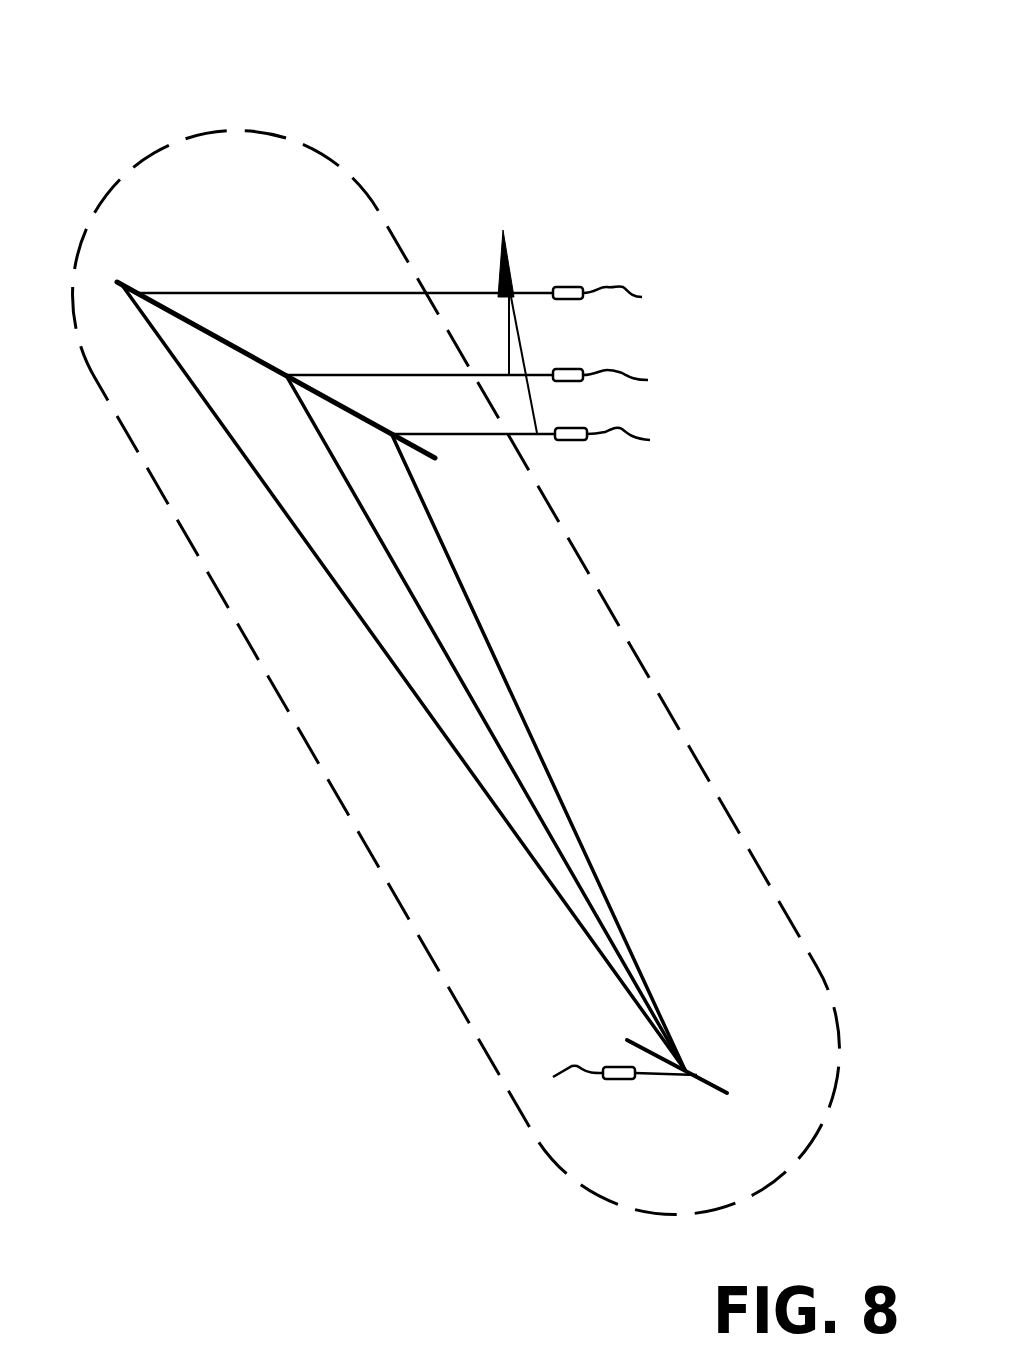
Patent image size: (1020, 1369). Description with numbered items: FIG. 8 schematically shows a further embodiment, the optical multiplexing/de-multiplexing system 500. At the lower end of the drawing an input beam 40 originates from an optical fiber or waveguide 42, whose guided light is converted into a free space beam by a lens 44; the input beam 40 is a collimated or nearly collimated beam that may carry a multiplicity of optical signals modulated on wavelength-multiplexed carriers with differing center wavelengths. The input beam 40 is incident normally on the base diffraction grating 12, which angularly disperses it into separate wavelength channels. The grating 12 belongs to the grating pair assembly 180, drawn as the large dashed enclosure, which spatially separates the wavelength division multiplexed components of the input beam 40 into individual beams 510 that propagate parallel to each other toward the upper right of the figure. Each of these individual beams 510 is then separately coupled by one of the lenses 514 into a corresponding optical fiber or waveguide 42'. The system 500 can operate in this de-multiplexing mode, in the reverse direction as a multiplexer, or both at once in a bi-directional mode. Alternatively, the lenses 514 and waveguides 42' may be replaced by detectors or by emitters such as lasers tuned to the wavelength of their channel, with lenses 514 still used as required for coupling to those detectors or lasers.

The optical multiplexing/de-multiplexing system 500 is at (403, 538).
The individual beams 510 is at (505, 314).
The lenses 514 is at (563, 287).
The optical fibers or waveguides 42' is at (661, 363).
The grating pair assembly 180 is at (640, 658).
The optical fiber 42 is at (565, 1037).
The lens 44 is at (618, 1080).
The input beam 40 is at (660, 1075).
The base diffraction grating 12 is at (697, 1082).